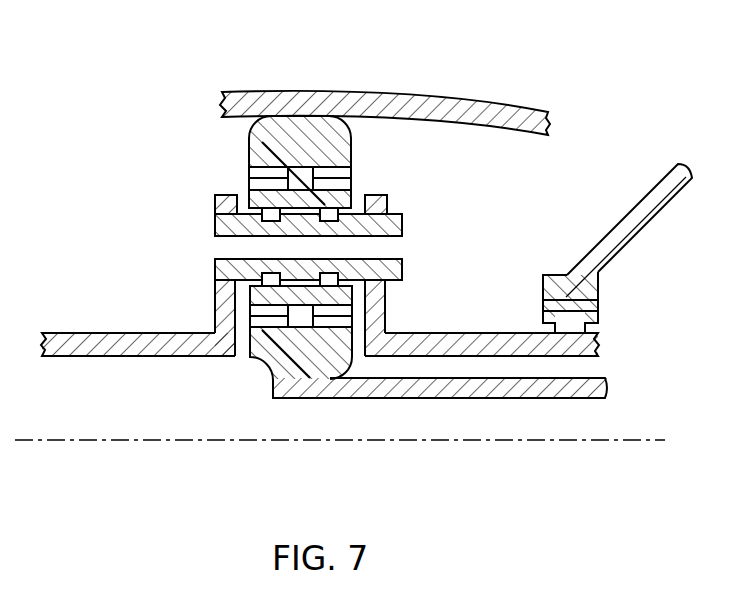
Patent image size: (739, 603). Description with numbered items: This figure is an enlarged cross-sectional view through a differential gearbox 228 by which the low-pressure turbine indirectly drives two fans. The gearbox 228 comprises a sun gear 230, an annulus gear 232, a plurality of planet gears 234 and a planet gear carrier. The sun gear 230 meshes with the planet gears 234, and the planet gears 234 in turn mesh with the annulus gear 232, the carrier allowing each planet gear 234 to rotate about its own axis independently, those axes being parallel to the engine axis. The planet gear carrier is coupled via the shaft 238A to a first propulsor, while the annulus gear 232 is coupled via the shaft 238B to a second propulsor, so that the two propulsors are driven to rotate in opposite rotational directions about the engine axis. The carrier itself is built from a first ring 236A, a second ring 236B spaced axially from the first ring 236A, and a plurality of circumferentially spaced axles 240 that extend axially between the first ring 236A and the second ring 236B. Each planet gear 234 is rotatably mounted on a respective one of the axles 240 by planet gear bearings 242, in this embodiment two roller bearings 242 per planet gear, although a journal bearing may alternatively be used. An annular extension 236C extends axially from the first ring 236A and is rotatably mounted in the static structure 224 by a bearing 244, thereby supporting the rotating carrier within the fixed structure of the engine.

The static structure 224 is at (627, 228).
The gearbox 228 is at (182, 388).
The sun gear 230 is at (273, 322).
The annulus gear 232 is at (290, 143).
The planet gears 234 is at (340, 197).
The first ring 236A is at (378, 312).
The second ring 236B is at (222, 295).
The annular extension 236C is at (493, 333).
The shaft 238A is at (88, 348).
The shaft 238B is at (346, 103).
The axles 240 is at (248, 228).
The planet gear bearings 242 is at (262, 278).
The bearing 244 is at (598, 312).